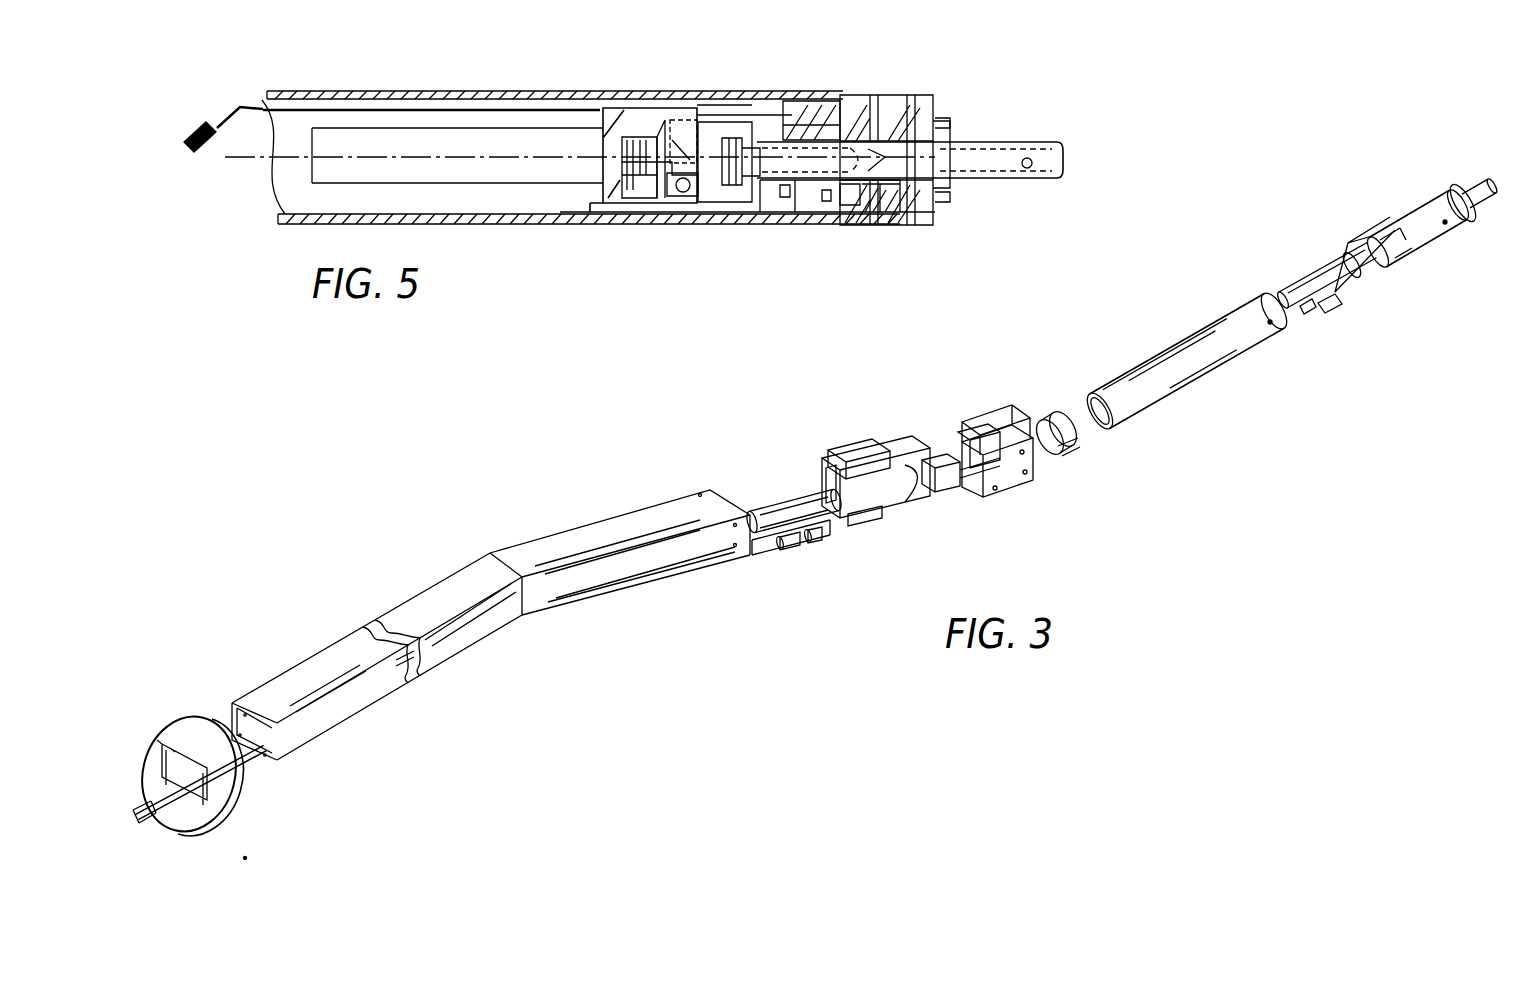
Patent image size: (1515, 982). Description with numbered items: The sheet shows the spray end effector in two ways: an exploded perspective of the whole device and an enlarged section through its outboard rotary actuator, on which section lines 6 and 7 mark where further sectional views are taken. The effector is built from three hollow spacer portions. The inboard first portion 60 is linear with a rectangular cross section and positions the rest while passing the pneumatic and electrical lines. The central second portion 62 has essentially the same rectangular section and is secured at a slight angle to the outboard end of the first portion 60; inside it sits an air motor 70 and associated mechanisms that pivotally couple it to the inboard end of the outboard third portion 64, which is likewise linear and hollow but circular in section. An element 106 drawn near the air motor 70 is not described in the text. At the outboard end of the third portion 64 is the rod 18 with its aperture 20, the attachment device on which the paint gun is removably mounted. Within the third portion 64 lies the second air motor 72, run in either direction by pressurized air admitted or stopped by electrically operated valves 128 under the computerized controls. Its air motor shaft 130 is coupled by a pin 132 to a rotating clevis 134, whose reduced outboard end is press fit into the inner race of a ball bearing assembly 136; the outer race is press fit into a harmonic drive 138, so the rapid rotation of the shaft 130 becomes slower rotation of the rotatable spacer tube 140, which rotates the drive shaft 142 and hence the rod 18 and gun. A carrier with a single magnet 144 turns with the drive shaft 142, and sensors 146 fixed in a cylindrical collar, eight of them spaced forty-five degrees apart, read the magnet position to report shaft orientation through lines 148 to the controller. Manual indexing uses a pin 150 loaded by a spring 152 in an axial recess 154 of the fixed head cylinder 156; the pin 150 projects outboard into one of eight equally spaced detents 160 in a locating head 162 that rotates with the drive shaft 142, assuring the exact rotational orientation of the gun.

In FIG. 5, the rod 18 is at (1050, 178).
In FIG. 5, the aperture 20 is at (1028, 158).
In FIG. 3, the first portion 60 is at (408, 590).
In FIG. 3, the second portion 62 is at (643, 512).
In FIG. 5, the third portion 64 is at (307, 92).
In FIG. 3, the third portion 64 is at (1200, 360).
In FIG. 3, the air motor 70 is at (796, 492).
In FIG. 5, the second air motor 72 is at (403, 145).
In FIG. 3, the second air motor 72 is at (1300, 292).
In FIG. 3, the pivot pin assembly 106 is at (797, 538).
In FIG. 3, the electrically operated valves 128 is at (1334, 306).
In FIG. 5, the air motor shaft 130 is at (652, 140).
In FIG. 5, the pin 132 is at (606, 192).
In FIG. 5, the rotating clevis 134 is at (650, 185).
In FIG. 5, the ball bearing assembly 136 is at (692, 198).
In FIG. 5, the harmonic drive 138 is at (678, 102).
In FIG. 5, the rotatable spacer tube 140 is at (724, 124).
In FIG. 5, the drive shaft 142 is at (830, 203).
In FIG. 5, the magnet 144 is at (846, 123).
In FIG. 5, the sensors 146 is at (802, 118).
In FIG. 5, the lines 148 is at (343, 110).
In FIG. 5, the pin 150 is at (869, 193).
In FIG. 5, the spring 152 is at (857, 206).
In FIG. 5, the axial recess 154 is at (872, 200).
In FIG. 5, the fixed head cylinder 156 is at (842, 183).
In FIG. 5, the detents 160 is at (935, 222).
In FIG. 5, the locating head 162 is at (928, 209).
In FIG. 5, the section line 6- 6 is at (797, 105).
In FIG. 5, the section line 7- 7 is at (922, 260).